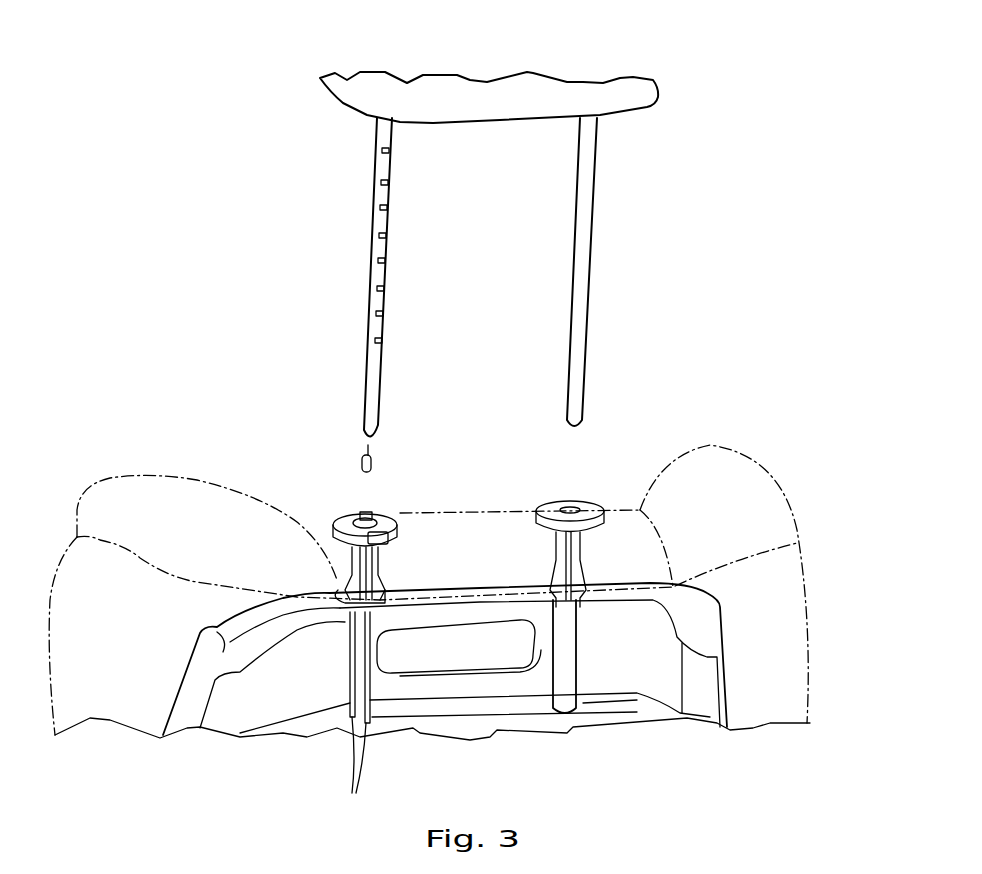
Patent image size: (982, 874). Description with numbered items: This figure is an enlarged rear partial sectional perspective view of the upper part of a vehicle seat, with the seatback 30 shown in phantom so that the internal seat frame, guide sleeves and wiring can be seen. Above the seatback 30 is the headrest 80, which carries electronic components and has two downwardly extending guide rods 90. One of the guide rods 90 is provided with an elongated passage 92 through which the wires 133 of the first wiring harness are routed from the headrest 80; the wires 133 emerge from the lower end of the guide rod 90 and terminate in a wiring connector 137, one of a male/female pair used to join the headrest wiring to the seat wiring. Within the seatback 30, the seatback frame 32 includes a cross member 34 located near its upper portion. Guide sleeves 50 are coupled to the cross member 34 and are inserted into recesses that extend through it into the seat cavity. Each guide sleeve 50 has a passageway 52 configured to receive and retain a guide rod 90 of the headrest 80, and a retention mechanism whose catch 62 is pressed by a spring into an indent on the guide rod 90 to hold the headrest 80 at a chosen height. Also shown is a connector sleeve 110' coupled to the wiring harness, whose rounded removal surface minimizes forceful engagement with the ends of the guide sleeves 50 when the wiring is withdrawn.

The headrest 80 is at (560, 90).
The guide rod 90 is at (375, 128).
The elongated passage 92 is at (386, 212).
The wires 133 is at (366, 450).
The connector 137 is at (373, 464).
The seatback 30 is at (760, 500).
The seatback frame 32 is at (236, 668).
The cross member 34 is at (502, 690).
The guide sleeve 50 is at (580, 505).
The connector sleeve 110' is at (389, 540).
The catch 62 is at (388, 537).
The passageway 52 is at (353, 703).